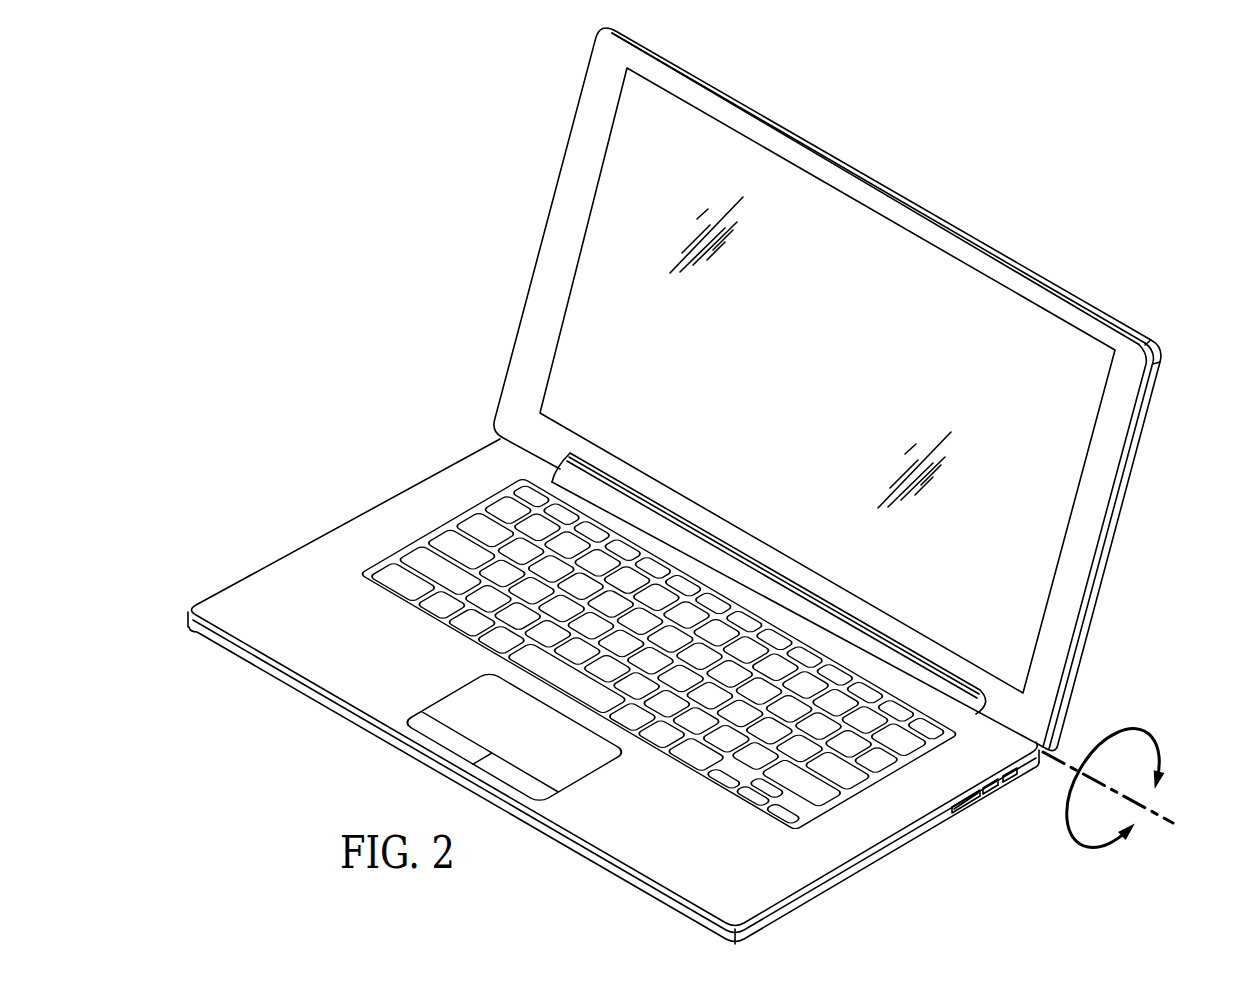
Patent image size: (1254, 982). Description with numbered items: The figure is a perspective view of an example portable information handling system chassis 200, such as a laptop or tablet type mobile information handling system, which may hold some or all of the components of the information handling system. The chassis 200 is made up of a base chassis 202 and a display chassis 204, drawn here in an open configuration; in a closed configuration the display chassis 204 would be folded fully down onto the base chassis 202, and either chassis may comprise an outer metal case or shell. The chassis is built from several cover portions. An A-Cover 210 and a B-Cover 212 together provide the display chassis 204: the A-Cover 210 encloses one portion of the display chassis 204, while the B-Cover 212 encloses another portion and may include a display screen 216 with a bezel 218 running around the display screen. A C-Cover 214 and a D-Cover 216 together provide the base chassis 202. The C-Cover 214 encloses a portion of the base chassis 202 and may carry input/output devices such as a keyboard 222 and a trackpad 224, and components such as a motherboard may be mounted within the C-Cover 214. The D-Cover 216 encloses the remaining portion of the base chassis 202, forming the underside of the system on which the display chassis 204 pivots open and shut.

The portable information handling system chassis 200 is at (704, 490).
The base chassis 202 is at (674, 490).
The display chassis 204 is at (1148, 569).
The A-Cover 210 is at (1133, 474).
The B-Cover 212 is at (1088, 322).
The C-Cover 214 is at (258, 580).
The D-Cover 216 is at (908, 263).
The bezel 218 is at (752, 106).
The keyboard 222 is at (482, 505).
The trackpad 224 is at (575, 772).